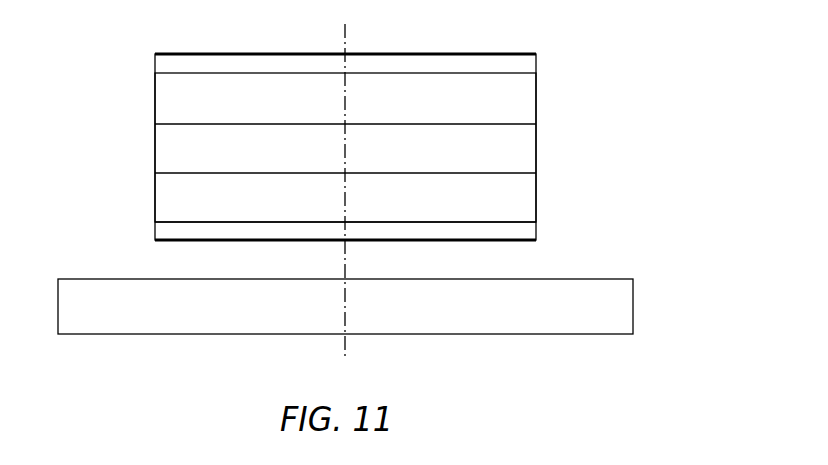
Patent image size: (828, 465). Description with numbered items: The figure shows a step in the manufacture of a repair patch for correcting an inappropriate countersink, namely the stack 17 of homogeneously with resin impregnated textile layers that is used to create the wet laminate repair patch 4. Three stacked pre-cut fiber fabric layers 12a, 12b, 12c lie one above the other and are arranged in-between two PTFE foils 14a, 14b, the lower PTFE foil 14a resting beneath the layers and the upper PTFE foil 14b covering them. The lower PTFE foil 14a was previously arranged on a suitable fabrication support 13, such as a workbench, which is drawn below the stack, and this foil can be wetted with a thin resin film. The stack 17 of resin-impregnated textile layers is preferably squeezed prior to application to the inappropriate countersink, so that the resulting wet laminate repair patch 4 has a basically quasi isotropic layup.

The stack of homogeneously with resin impregnated textile layers 17 is at (616, 82).
The wet laminate repair patch 4 is at (592, 143).
The pre-cut fiber fabric layer 12a is at (155, 200).
The pre-cut fiber fabric layer 12b is at (155, 145).
The pre-cut fiber fabric layer 12c is at (155, 95).
The PTFE foil 14a is at (136, 239).
The PTFE foil 14b is at (136, 50).
The fabrication support 13 is at (633, 303).